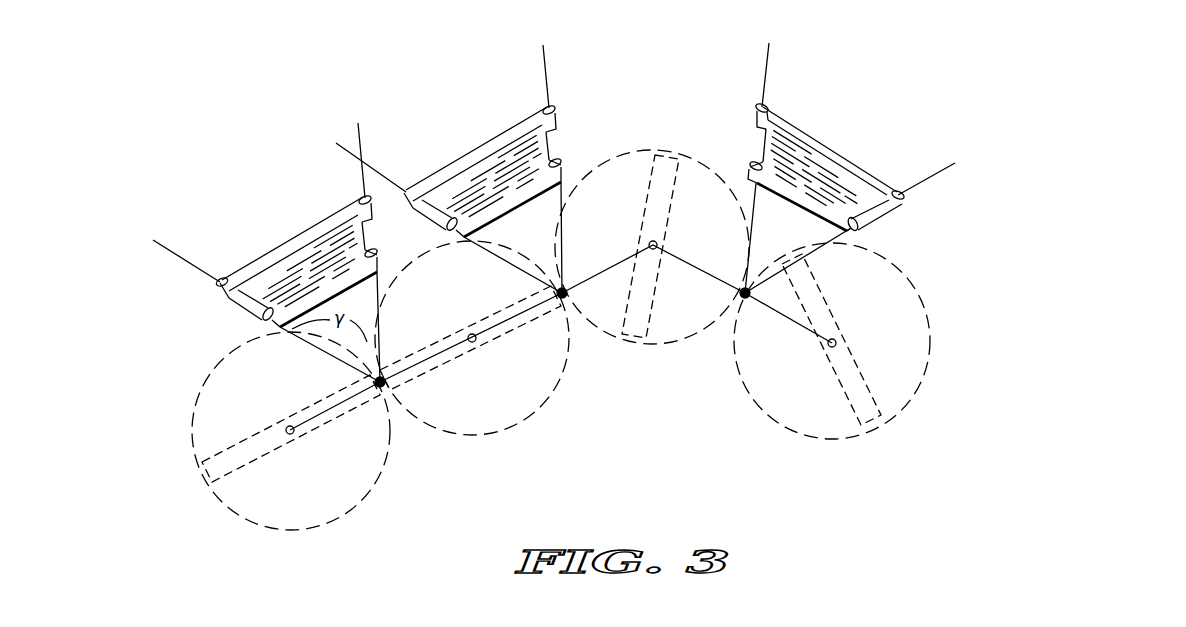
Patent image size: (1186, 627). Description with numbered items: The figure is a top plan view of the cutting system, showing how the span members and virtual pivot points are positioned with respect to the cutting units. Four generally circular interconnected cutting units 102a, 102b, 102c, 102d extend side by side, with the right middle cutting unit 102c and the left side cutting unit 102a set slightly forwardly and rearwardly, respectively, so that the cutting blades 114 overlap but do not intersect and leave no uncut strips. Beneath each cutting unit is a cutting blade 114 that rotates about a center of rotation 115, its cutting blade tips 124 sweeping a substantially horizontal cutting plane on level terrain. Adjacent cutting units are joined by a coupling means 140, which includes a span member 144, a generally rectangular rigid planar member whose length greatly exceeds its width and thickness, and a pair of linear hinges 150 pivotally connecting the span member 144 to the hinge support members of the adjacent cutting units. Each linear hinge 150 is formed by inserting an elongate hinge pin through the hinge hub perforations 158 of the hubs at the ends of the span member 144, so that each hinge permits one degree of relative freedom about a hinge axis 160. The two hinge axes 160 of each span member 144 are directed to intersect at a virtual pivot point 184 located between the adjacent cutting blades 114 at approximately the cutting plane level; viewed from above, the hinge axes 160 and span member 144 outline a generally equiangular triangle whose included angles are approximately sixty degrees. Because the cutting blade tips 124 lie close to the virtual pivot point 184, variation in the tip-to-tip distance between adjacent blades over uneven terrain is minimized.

The left side cutting unit 102a is at (243, 518).
The cutting unit 102b is at (507, 434).
The right middle cutting unit 102c is at (646, 347).
The cutting unit 102d is at (837, 438).
The cutting blade 114 is at (226, 448).
The center of rotation 115 is at (470, 343).
The cutting blade tips 124 is at (358, 442).
The coupling means 140 is at (276, 246).
The span member 144 is at (337, 236).
The linear hinge 150 is at (244, 306).
The hinge hub perforation 158 is at (220, 280).
The hinge axis 160 is at (336, 143).
The virtual pivot point 184 is at (380, 384).